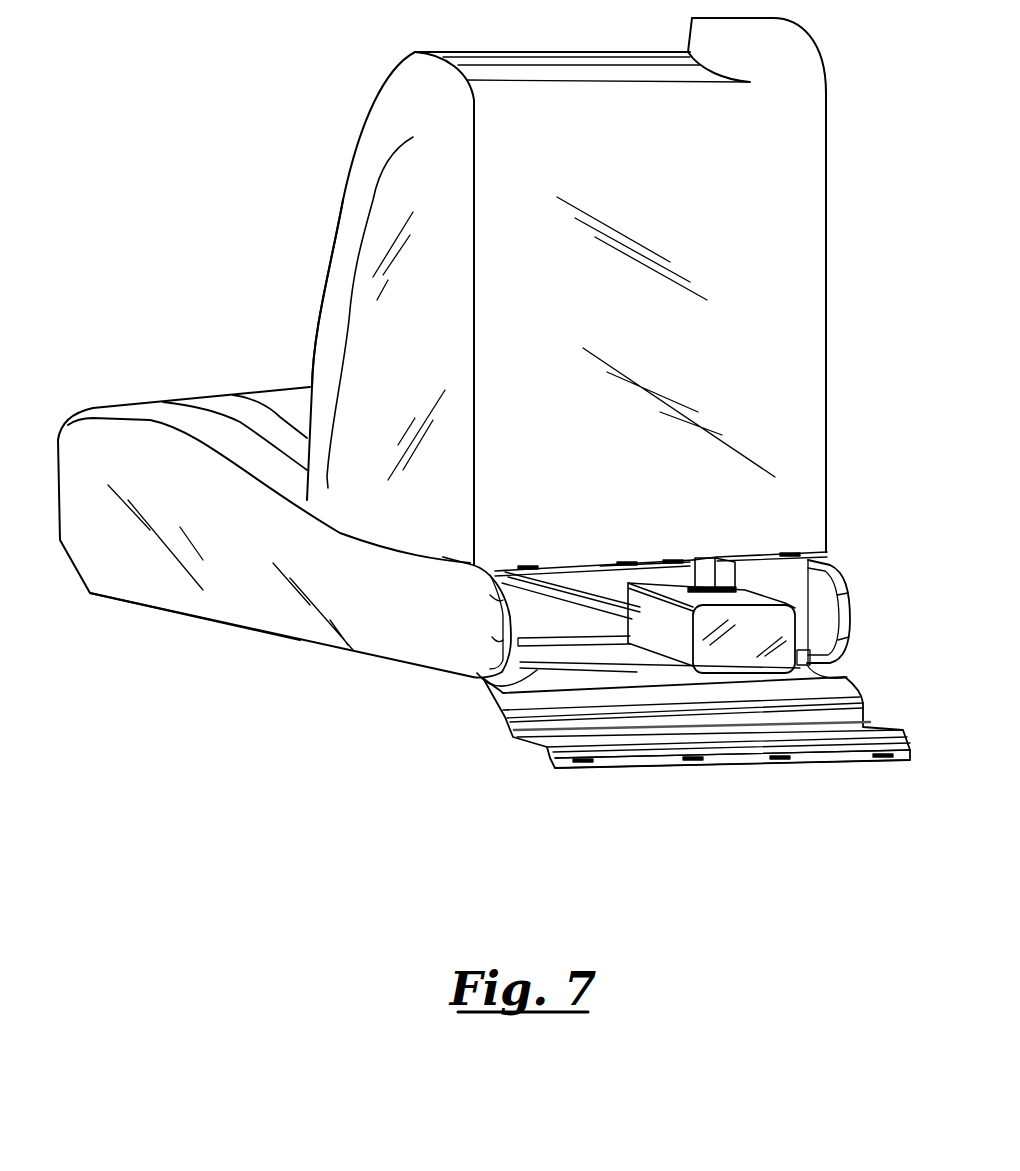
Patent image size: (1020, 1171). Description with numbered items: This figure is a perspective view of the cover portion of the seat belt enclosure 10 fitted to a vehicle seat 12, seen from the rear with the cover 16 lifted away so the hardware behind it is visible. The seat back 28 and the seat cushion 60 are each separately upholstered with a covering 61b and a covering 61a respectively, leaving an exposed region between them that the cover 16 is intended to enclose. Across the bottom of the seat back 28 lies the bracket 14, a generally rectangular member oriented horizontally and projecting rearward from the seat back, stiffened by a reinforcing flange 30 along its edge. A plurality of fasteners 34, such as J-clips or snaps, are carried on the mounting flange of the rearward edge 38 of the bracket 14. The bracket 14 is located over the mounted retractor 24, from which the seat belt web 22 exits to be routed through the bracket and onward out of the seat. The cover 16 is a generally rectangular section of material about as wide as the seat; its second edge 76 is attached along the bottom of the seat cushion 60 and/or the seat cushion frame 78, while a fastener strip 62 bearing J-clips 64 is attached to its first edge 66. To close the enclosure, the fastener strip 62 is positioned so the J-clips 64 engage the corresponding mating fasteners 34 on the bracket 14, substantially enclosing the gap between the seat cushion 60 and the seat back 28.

The seat belt enclosure 10 is at (700, 820).
The vehicle seat 12 is at (290, 340).
The bracket 14 is at (552, 568).
The cover 16 is at (505, 735).
The seat belt web 22 is at (708, 572).
The retractor 24 is at (740, 639).
The seat back 28 is at (826, 267).
The reinforcing flange 30 is at (828, 553).
The fasteners 34 is at (528, 566).
The rearward edge 38 is at (650, 562).
The seat cushion 60 is at (165, 402).
The covering 61a is at (228, 613).
The covering 61b is at (330, 258).
The fastener strip 62 is at (627, 768).
The J-clips 64 is at (583, 763).
The first edge 66 is at (753, 765).
The second edge 76 is at (833, 681).
The seat cushion frame 78 is at (500, 681).